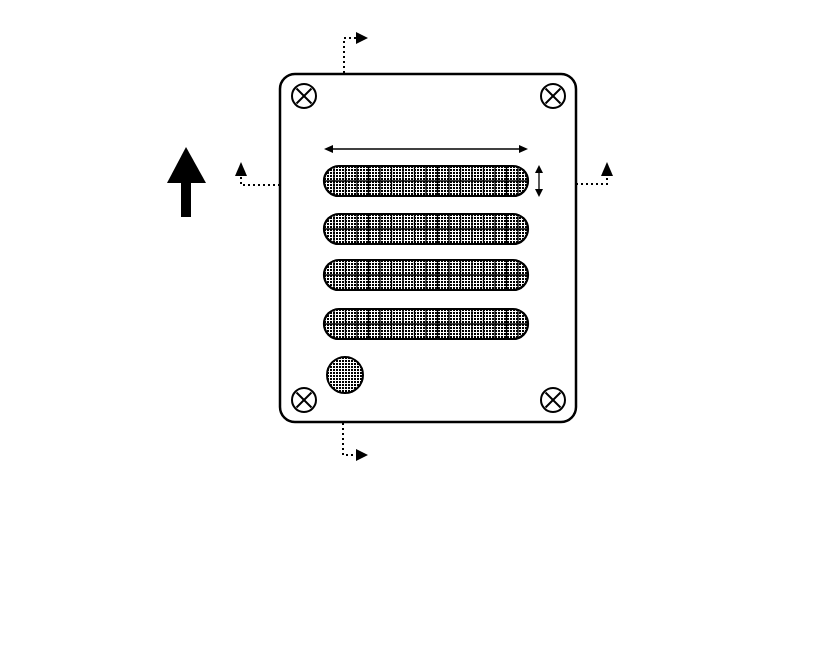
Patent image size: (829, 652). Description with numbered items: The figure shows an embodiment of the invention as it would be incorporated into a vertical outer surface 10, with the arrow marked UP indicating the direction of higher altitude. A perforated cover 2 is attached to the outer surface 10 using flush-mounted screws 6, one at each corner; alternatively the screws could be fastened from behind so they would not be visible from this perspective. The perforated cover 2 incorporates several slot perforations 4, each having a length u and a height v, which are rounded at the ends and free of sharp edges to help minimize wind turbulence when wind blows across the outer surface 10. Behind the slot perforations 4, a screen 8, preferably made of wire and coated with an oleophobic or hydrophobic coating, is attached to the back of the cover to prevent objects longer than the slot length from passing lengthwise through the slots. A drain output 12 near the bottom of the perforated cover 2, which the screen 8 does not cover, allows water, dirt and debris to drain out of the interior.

The outer surface 10 is at (203, 43).
The perforated cover 2 is at (598, 295).
The slot perforation 4 is at (436, 269).
The flush-mounted screws 6 is at (304, 84).
The screen 8 is at (324, 273).
The drain output 12 is at (335, 379).